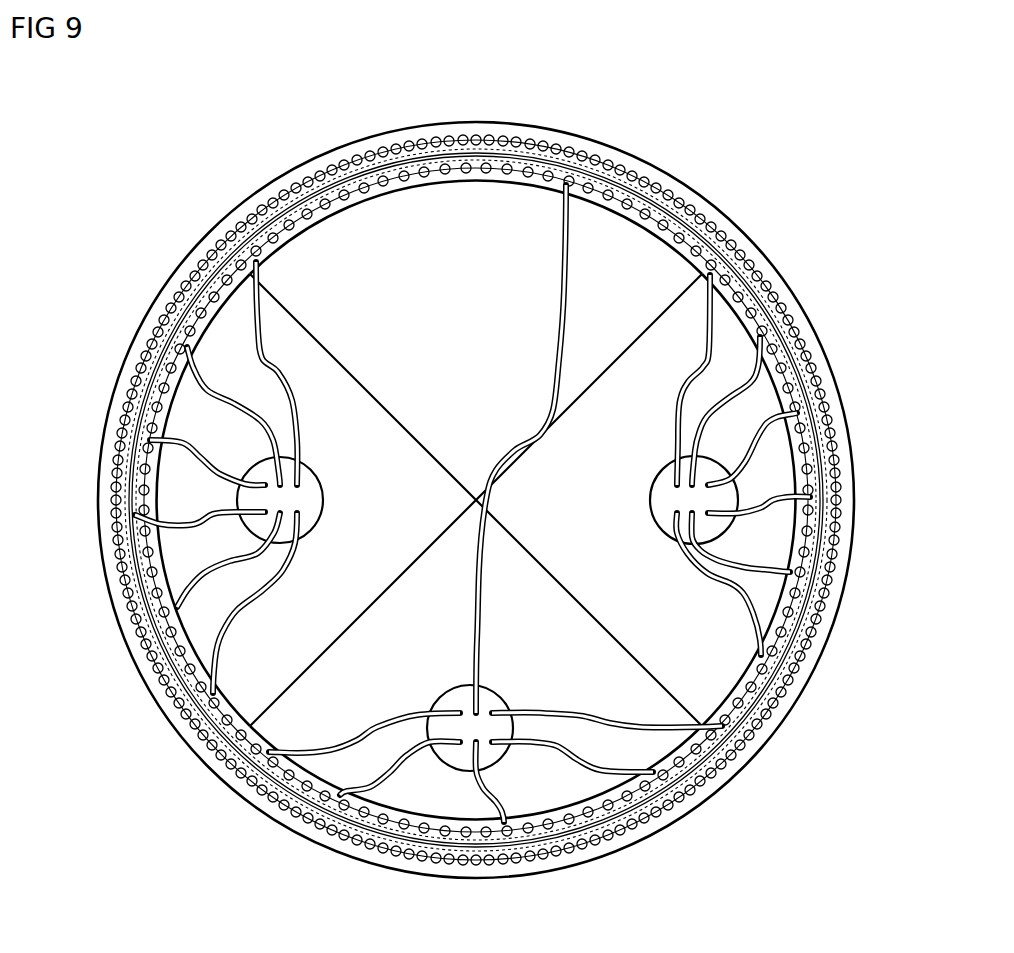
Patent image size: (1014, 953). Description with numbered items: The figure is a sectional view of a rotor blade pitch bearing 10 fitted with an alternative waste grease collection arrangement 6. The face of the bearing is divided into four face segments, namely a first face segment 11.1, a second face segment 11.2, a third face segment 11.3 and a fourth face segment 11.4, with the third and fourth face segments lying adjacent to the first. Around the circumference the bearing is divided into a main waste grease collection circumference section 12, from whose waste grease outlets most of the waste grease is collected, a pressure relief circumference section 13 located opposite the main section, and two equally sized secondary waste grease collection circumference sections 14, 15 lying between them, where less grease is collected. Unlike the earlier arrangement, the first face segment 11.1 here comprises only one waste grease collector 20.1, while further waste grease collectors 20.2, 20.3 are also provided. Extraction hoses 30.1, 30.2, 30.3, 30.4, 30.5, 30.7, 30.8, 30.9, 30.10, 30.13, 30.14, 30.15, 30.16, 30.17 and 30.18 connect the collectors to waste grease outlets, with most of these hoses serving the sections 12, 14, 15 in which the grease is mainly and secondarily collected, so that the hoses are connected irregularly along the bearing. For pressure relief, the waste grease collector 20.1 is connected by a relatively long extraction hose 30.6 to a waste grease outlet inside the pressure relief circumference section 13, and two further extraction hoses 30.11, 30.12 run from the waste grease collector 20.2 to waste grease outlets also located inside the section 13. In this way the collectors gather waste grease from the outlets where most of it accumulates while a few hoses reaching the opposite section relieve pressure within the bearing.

The waste grease collection arrangement 6 is at (814, 724).
The rotor blade pitch bearing 10 is at (344, 150).
The first face segment 11.1 is at (272, 740).
The second face segment 11.2 is at (416, 192).
The third face segment 11.3 is at (728, 687).
The fourth face segment 11.4 is at (245, 698).
The main waste grease collection circumference section 12 is at (435, 845).
The pressure relief circumference section 13 is at (499, 170).
The secondary waste grease collection circumference section 14 is at (838, 522).
The secondary waste grease collection circumference section 15 is at (140, 398).
The waste grease collector 20.1 is at (460, 693).
The waste grease collector 20.2 is at (650, 500).
The waste grease collector 20.3 is at (322, 510).
The extraction hose 30.1 is at (387, 718).
The extraction hose 30.2 is at (368, 790).
The extraction hose 30.3 is at (492, 798).
The extraction hose 30.4 is at (613, 775).
The extraction hose 30.5 is at (565, 710).
The extraction hose 30.6 is at (569, 265).
The extraction hose 30.7 is at (765, 655).
The extraction hose 30.8 is at (795, 575).
The extraction hose 30.9 is at (815, 497).
The extraction hose 30.10 is at (770, 418).
The extraction hose 30.11 is at (763, 370).
The extraction hose 30.12 is at (676, 430).
The extraction hose 30.13 is at (300, 553).
The extraction hose 30.14 is at (175, 607).
The extraction hose 30.15 is at (135, 515).
The extraction hose 30.16 is at (150, 440).
The extraction hose 30.17 is at (187, 347).
The extraction hose 30.18 is at (257, 303).